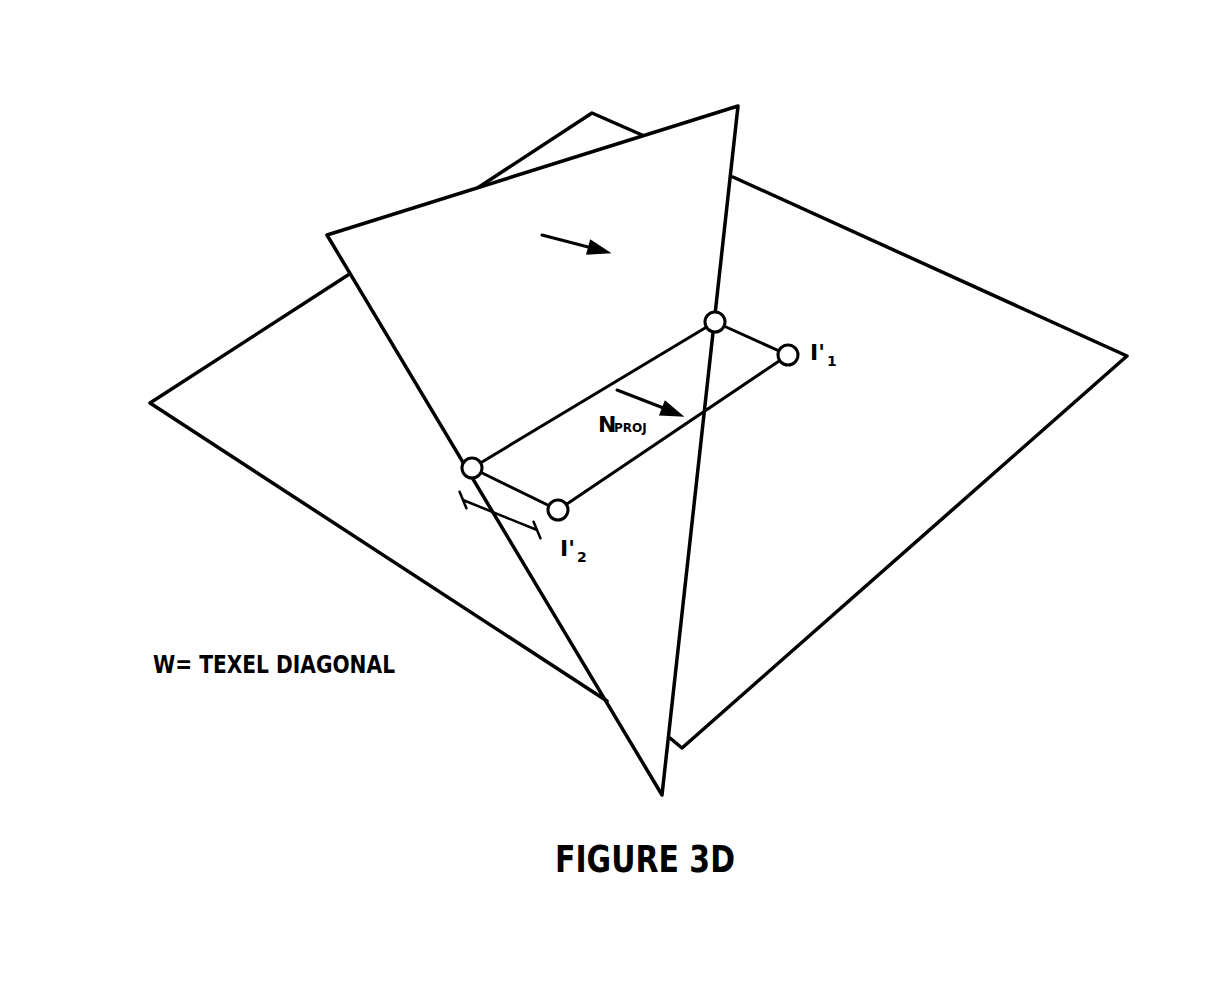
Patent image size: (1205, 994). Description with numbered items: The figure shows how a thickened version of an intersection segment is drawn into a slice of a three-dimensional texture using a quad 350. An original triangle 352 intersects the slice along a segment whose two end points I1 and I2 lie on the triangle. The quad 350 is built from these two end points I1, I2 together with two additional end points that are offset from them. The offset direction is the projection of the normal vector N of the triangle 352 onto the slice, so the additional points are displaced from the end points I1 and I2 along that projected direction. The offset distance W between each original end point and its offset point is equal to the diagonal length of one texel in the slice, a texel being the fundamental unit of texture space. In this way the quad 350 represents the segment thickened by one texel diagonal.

The quad 350 is at (795, 299).
The original triangle 352 is at (755, 107).
The end point I1 is at (728, 321).
The end point I2 is at (461, 480).
The normal vector N is at (574, 254).
The offset distance W is at (500, 515).